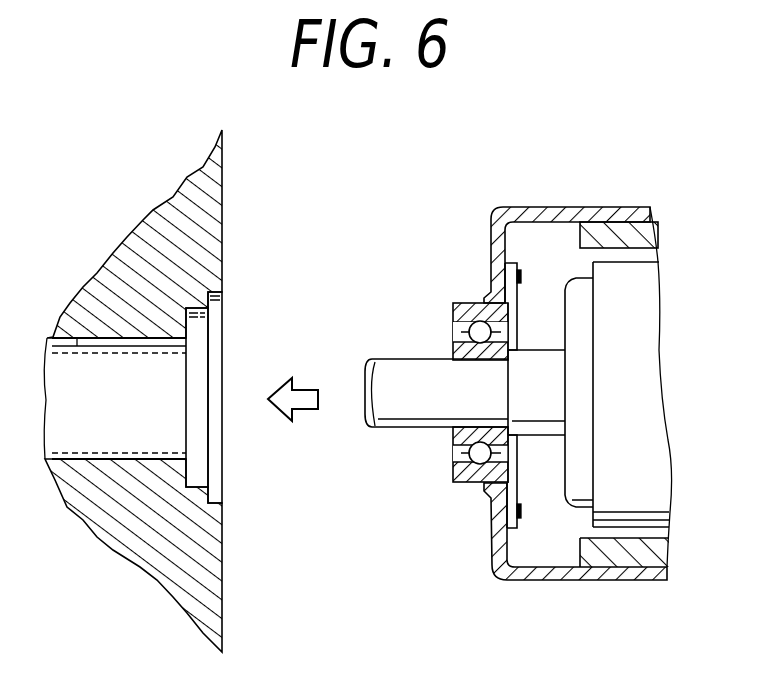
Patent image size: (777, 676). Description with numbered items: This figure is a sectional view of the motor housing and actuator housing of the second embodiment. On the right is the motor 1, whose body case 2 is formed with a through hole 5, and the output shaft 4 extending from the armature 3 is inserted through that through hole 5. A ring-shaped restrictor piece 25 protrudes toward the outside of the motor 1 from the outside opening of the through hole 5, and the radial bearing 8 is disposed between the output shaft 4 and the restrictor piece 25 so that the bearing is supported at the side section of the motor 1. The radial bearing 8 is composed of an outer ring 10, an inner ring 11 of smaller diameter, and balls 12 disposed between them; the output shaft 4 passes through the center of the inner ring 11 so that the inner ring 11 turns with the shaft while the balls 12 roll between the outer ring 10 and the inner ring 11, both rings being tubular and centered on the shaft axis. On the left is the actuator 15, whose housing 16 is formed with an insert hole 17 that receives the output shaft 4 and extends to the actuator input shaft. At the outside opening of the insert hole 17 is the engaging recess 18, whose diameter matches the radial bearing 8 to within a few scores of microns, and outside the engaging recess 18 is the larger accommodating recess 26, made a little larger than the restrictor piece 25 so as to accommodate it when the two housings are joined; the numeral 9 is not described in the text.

The motor 1 is at (520, 181).
The body case 2 is at (569, 212).
The armature 3 is at (652, 300).
The output shaft 4 is at (382, 378).
The through hole 5 is at (512, 484).
The radial bearing 8 is at (446, 459).
The bearing holder 9 is at (519, 318).
The outer ring 10 is at (478, 302).
The inner ring 11 is at (453, 343).
The balls 12 is at (453, 316).
The actuator 15 is at (128, 177).
The housing 16 is at (131, 246).
The insert hole 17 is at (78, 349).
The engaging recess 18 is at (200, 328).
The restrictor piece 25 is at (488, 297).
The accommodating recess 26 is at (213, 302).